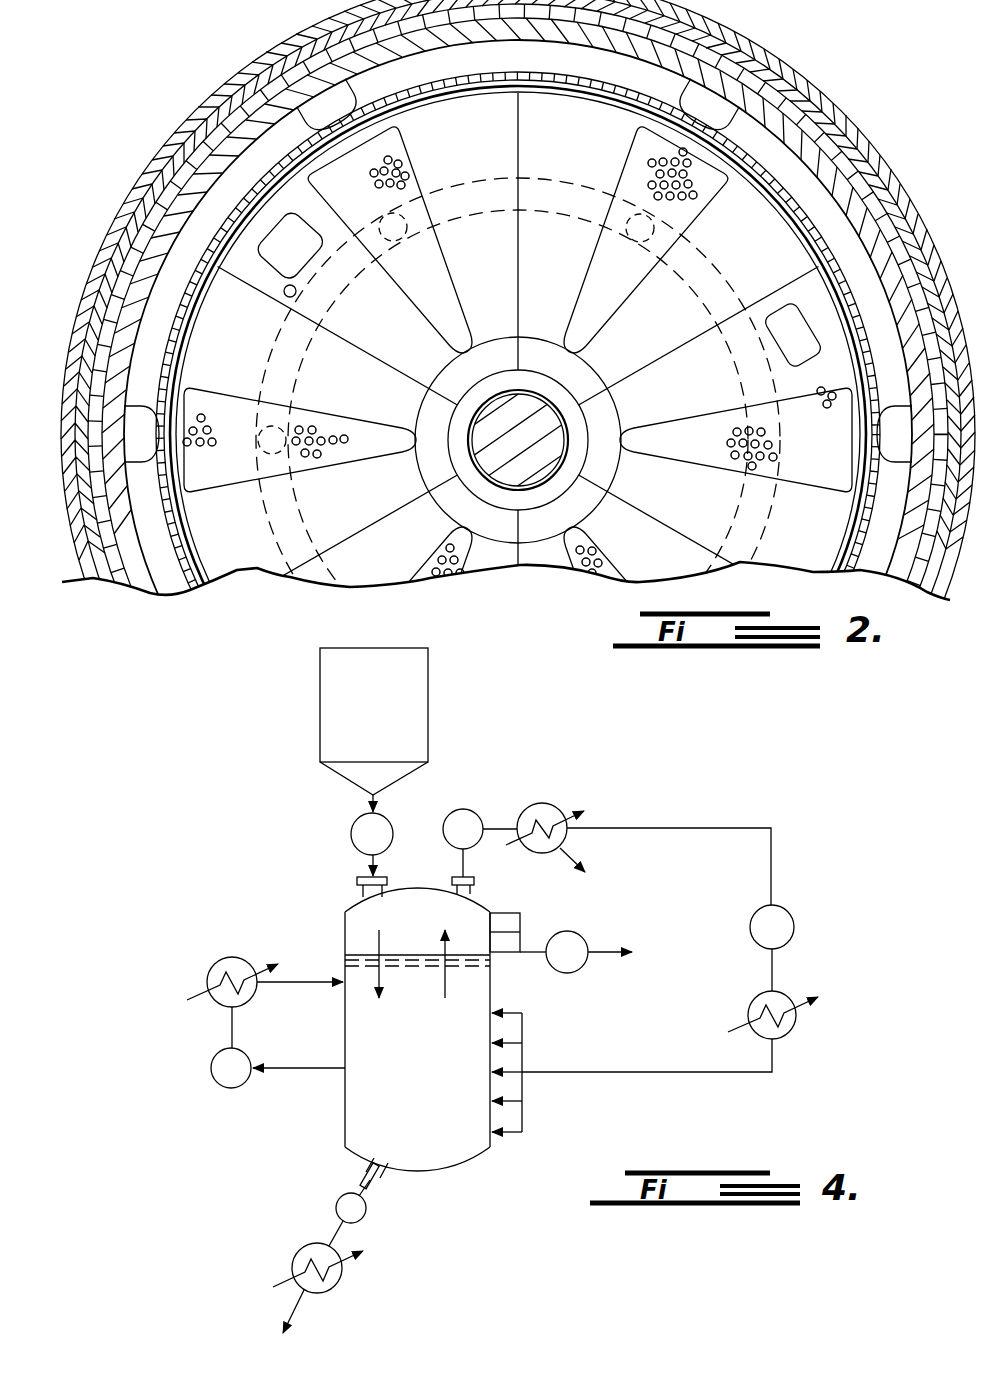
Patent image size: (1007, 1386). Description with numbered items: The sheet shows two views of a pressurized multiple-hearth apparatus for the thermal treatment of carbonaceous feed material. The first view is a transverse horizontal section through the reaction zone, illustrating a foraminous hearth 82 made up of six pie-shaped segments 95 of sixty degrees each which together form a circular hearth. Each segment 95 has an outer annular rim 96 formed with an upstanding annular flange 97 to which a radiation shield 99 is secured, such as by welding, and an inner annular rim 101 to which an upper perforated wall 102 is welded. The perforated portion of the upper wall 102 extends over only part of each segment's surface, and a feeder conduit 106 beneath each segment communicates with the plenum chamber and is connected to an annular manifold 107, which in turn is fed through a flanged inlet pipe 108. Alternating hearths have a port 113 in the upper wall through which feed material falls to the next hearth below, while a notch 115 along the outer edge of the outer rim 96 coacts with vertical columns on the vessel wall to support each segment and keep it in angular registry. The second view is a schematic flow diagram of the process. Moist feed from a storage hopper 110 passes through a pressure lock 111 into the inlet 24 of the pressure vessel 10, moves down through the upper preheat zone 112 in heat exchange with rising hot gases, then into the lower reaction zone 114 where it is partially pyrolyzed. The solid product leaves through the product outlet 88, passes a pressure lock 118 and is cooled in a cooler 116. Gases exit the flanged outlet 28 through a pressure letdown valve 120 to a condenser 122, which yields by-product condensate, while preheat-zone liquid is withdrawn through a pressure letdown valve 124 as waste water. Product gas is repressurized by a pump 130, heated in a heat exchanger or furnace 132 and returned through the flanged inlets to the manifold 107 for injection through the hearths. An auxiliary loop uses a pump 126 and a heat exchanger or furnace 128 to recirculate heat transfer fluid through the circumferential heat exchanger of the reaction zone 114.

In FIG. 4, the pressure vessel 10 is at (343, 1135).
In FIG. 4, the inlet 24 is at (357, 881).
In FIG. 4, the flanged outlet 28 is at (474, 881).
In FIG. 2, the foraminous hearth 82 is at (805, 188).
In FIG. 4, the product outlet 88 is at (380, 1182).
In FIG. 2, the pie-shaped segment 95 is at (220, 193).
In FIG. 2, the outer annular rim 96 is at (248, 170).
In FIG. 2, the upstanding annular flange 97 is at (230, 233).
In FIG. 2, the radiation shield 99 is at (548, 77).
In FIG. 2, the inner annular rim 101 is at (610, 472).
In FIG. 2, the upper perforated wall 102 is at (445, 279).
In FIG. 2, the feeder conduit 106 is at (408, 230).
In FIG. 2, the annular manifold 107 is at (272, 360).
In FIG. 4, the flanged inlet pipe 108 is at (525, 1110).
In FIG. 4, the storage hopper 110 is at (420, 673).
In FIG. 4, the pressure lock 111 is at (352, 829).
In FIG. 4, the upper preheat zone 112 is at (345, 920).
In FIG. 2, the port 113 is at (296, 296).
In FIG. 4, the lower reaction zone 114 is at (377, 1027).
In FIG. 2, the notch 115 is at (350, 88).
In FIG. 4, the cooler 116 is at (342, 1276).
In FIG. 4, the pressure lock 118 is at (366, 1214).
In FIG. 4, the pressure letdown valve 120 is at (463, 809).
In FIG. 4, the condenser 122 is at (555, 806).
In FIG. 4, the pressure letdown valve 124 is at (567, 973).
In FIG. 4, the pump 126 is at (220, 1083).
In FIG. 4, the heat exchanger or furnace 128 is at (232, 957).
In FIG. 4, the pump 130 is at (795, 927).
In FIG. 4, the heat exchanger or furnace 132 is at (797, 1020).